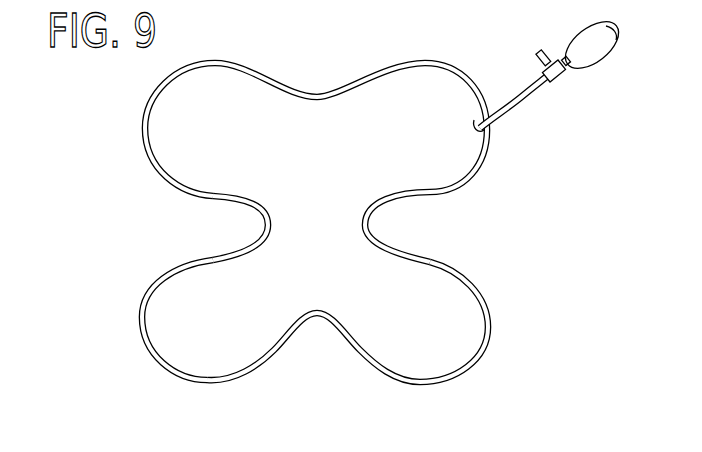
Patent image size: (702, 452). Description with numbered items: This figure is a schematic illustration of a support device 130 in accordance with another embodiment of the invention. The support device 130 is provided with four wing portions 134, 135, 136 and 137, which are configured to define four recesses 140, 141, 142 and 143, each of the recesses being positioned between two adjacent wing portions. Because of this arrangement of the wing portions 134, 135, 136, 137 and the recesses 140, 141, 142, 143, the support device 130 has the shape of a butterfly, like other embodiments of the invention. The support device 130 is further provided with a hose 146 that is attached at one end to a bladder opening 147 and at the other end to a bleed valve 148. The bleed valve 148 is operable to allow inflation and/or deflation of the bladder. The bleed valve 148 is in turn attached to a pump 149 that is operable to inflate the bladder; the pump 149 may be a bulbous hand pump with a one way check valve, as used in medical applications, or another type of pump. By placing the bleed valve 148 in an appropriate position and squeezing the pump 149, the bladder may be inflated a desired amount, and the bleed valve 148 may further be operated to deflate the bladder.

The support device 130 is at (368, 50).
The wing portion 134 is at (178, 134).
The wing portion 135 is at (432, 157).
The wing portion 136 is at (213, 352).
The wing portion 137 is at (432, 353).
The recess 140 is at (317, 86).
The recess 141 is at (237, 222).
The recess 142 is at (387, 225).
The recess 143 is at (317, 342).
The hose 146 is at (523, 100).
The bladder opening 147 is at (472, 127).
The bleed valve 148 is at (543, 47).
The pump 149 is at (588, 40).